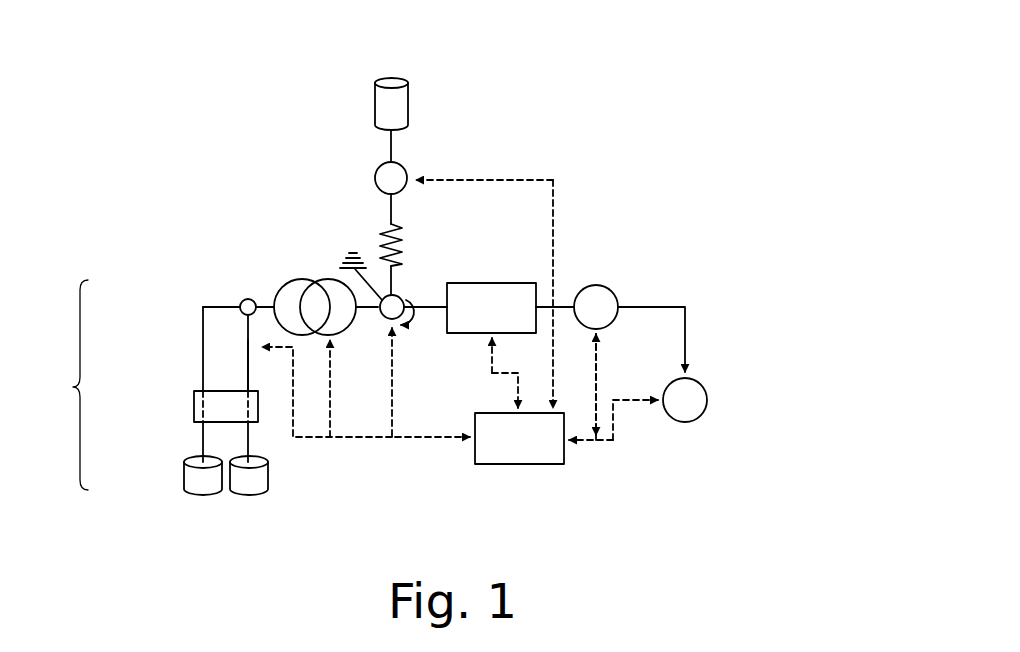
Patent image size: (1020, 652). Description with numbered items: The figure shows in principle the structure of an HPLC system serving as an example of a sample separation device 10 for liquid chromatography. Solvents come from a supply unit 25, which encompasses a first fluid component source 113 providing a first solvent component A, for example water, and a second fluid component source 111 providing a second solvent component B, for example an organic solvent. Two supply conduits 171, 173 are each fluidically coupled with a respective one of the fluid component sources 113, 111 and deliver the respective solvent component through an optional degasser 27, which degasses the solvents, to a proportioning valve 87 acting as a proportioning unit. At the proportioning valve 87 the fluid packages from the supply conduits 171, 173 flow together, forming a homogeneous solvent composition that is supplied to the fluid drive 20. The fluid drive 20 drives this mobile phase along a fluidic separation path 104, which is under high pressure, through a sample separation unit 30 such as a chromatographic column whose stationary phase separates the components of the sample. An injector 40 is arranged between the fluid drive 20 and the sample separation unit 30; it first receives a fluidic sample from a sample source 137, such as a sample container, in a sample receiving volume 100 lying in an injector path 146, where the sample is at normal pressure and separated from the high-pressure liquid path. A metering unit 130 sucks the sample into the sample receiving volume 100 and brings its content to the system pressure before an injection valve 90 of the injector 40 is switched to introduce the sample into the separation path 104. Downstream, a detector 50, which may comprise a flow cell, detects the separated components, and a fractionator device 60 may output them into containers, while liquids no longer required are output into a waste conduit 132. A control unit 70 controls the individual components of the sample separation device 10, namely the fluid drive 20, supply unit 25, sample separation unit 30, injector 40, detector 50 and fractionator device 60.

The sample separation device 10 is at (671, 272).
The fluid drive 20 is at (313, 280).
The supply unit 25 is at (64, 385).
The degasser 27 is at (194, 398).
The sample separation unit 30 is at (512, 283).
The injector 40 is at (408, 334).
The detector 50 is at (596, 285).
The fractionator device 60 is at (707, 398).
The control unit 70 is at (520, 465).
The proportioning valve 87 is at (246, 300).
The injection valve 90 is at (386, 321).
The sample receiving volume 100 is at (410, 241).
The fluidic separation path 104 is at (418, 307).
The second fluid component source 111 is at (252, 496).
The first fluid component source 113 is at (192, 496).
The metering unit 130 is at (386, 181).
The waste conduit 132 is at (347, 262).
The sample source 137 is at (383, 100).
The injector path 146 is at (391, 145).
The supply conduit 171 is at (203, 337).
The supply conduit 173 is at (248, 373).